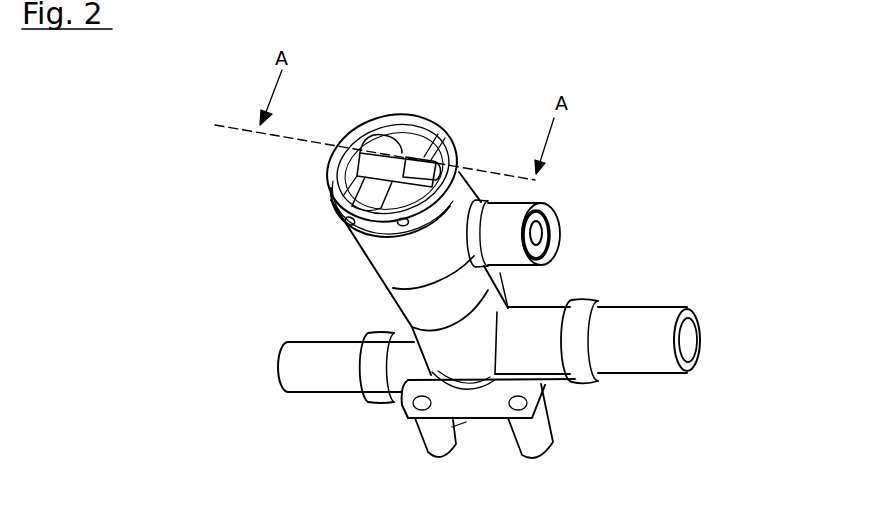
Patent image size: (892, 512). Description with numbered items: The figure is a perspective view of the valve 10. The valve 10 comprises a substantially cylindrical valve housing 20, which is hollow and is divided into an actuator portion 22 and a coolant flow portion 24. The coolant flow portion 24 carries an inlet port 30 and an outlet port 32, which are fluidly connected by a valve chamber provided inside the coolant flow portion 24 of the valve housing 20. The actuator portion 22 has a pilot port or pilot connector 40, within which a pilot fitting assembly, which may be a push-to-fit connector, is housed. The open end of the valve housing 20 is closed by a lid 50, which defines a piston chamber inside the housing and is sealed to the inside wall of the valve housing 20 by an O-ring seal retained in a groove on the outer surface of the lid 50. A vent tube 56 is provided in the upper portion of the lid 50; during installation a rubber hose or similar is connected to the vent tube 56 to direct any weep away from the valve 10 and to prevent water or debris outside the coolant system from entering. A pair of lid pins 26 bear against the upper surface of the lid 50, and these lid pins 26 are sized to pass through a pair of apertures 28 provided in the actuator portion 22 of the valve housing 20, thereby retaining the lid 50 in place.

The valve 10 is at (700, 141).
The valve housing 20 is at (415, 310).
The actuator portion 22 is at (372, 265).
The coolant flow portion 24 is at (485, 330).
The lid pins 26 is at (370, 193).
The apertures 28 is at (398, 223).
The inlet port 30 is at (642, 333).
The outlet port 32 is at (310, 370).
The pilot connector 40 is at (526, 204).
The lid 50 is at (380, 178).
The vent tube 56 is at (436, 158).